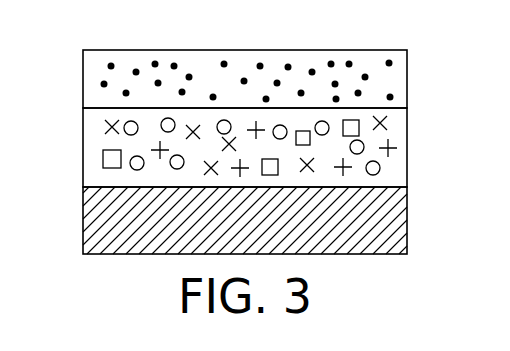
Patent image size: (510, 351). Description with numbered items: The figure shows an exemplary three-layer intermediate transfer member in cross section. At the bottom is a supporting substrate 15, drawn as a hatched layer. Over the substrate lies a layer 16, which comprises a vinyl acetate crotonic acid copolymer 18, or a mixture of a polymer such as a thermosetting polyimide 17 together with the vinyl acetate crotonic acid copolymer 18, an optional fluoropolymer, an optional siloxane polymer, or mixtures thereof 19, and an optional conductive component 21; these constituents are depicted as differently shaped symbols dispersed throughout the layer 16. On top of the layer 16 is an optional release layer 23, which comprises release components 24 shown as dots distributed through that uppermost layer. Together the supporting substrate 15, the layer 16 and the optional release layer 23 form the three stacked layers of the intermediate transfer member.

The supporting substrate 15 is at (407, 226).
The layer 16 is at (408, 127).
The thermosetting polyimide 17 is at (380, 169).
The vinyl acetate crotonic acid copolymer 18 is at (102, 159).
The optional fluoropolymer, optional siloxane polymer, or mixtures thereof 19 is at (108, 127).
The optional conductive component 21 is at (394, 143).
The optional release layer 23 is at (357, 50).
The release components 24 is at (174, 63).